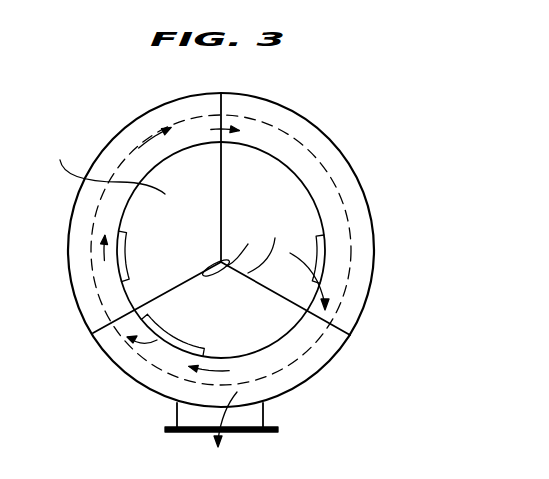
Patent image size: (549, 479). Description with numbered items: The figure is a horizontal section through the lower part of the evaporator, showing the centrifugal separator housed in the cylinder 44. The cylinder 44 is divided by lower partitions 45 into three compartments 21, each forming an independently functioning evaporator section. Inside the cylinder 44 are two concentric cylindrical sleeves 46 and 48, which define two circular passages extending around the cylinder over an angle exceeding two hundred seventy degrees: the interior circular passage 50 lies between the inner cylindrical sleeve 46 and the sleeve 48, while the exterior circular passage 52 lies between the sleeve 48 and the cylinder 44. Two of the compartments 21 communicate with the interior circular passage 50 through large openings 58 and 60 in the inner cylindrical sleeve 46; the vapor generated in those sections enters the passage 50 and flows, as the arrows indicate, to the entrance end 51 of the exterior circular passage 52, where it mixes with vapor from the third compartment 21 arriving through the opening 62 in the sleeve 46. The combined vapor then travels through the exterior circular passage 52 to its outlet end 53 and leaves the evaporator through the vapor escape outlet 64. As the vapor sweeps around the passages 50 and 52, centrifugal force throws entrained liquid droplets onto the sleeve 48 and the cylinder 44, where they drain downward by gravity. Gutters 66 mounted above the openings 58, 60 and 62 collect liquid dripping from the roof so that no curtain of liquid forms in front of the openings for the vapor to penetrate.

The compartment 21 is at (112, 169).
The cylinder 44 is at (335, 141).
The lower partition 45 is at (238, 253).
The inner cylindrical sleeve 46 is at (320, 210).
The cylindrical sleeve 48 is at (357, 243).
The interior circular passage 50 is at (180, 132).
The entrance end of exterior circular passage 51 is at (168, 385).
The exterior circular passage 52 is at (118, 157).
The outlet end of exterior circular passage 53 is at (203, 393).
The large opening 58 is at (315, 278).
The large opening 60 is at (118, 288).
The opening 62 is at (182, 338).
The vapor escape outlet 64 is at (265, 423).
The gutter 66 is at (323, 259).